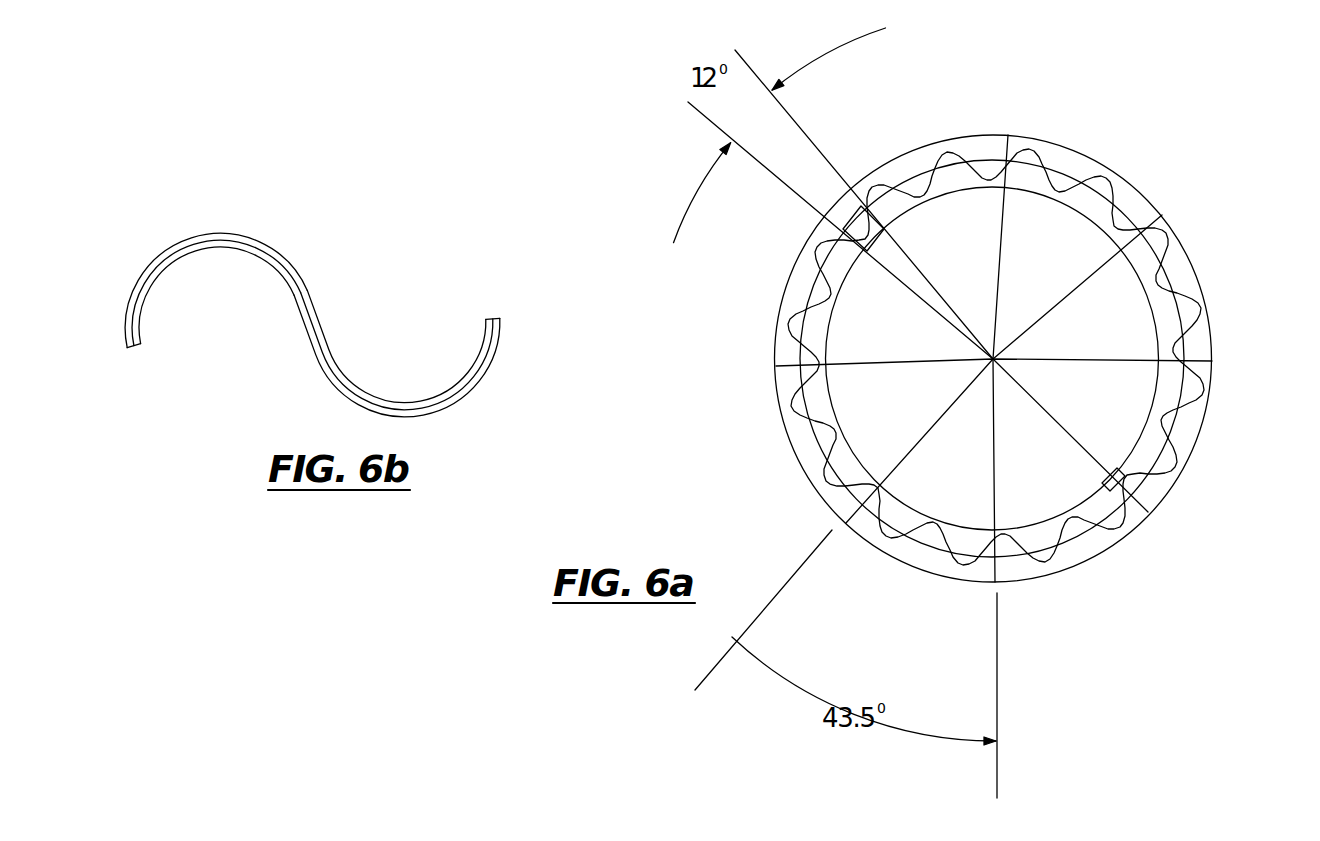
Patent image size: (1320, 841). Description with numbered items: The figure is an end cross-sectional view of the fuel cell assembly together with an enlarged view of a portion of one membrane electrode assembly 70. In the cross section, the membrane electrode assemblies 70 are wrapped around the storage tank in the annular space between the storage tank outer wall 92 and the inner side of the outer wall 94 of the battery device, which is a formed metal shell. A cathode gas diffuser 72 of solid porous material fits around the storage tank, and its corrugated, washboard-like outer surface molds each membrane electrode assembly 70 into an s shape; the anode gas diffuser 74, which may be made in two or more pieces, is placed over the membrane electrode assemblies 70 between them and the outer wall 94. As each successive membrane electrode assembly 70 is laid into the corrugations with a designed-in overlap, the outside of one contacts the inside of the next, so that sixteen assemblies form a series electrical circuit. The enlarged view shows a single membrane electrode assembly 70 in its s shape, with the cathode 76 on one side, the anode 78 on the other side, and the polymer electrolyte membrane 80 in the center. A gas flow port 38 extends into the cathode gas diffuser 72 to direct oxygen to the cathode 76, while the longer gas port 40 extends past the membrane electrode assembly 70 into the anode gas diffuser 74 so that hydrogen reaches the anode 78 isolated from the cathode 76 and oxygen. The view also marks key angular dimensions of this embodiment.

In FIG. 6b, the membrane electrode assembly 70 is at (368, 321).
In FIG. 6a, the membrane electrode assembly 70 is at (1088, 556).
In FIG. 6a, the cathode gas diffuser 72 is at (1085, 168).
In FIG. 6a, the anode gas diffuser 74 is at (781, 419).
In FIG. 6b, the cathode 76 is at (237, 244).
In FIG. 6b, the anode 78 is at (404, 400).
In FIG. 6b, the polymer electrolyte membrane 80 is at (492, 317).
In FIG. 6a, the storage tank outer wall 92 is at (1197, 380).
In FIG. 6a, the outer wall of the battery 94 is at (1213, 330).
In FIG. 6a, the gas port 40 is at (844, 226).
In FIG. 6a, the gas flow port 38 is at (1170, 491).